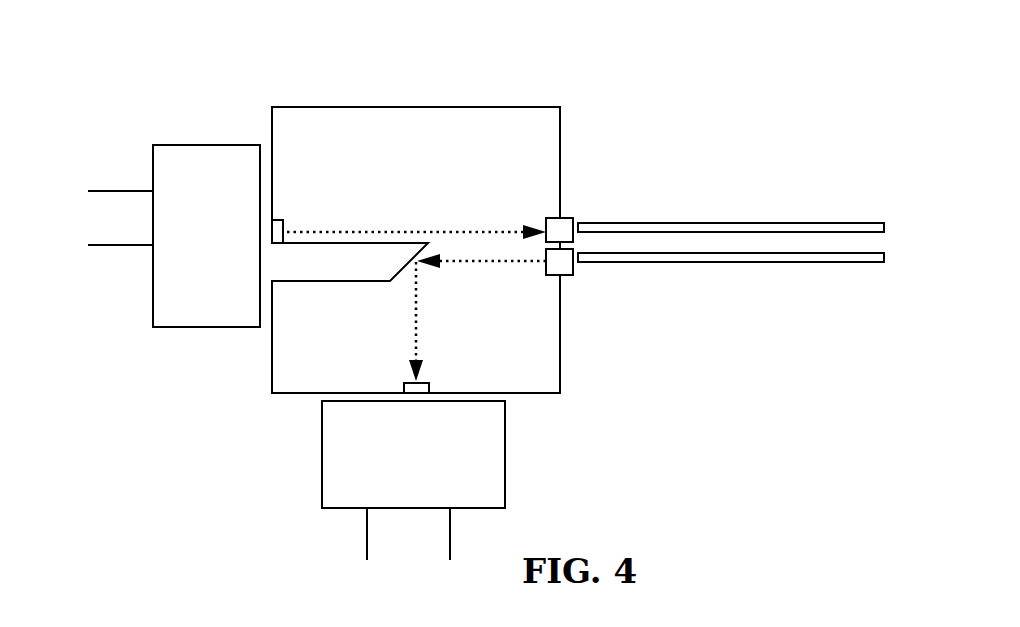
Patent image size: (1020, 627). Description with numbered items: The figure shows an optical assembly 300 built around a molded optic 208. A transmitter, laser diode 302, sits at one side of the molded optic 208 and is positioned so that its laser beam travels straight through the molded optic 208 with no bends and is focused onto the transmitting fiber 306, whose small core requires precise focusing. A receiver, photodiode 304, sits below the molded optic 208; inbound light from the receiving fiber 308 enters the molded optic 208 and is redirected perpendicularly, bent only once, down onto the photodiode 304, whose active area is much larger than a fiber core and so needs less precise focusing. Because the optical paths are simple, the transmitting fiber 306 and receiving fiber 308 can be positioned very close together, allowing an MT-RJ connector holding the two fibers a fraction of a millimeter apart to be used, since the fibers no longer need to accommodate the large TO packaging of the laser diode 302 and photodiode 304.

The optical assembly 300 is at (128, 55).
The molded optic 208 is at (370, 105).
The laser diode 302 is at (180, 268).
The photodiode 304 is at (382, 478).
The transmitting fiber 306 is at (726, 223).
The receiving fiber 308 is at (726, 262).